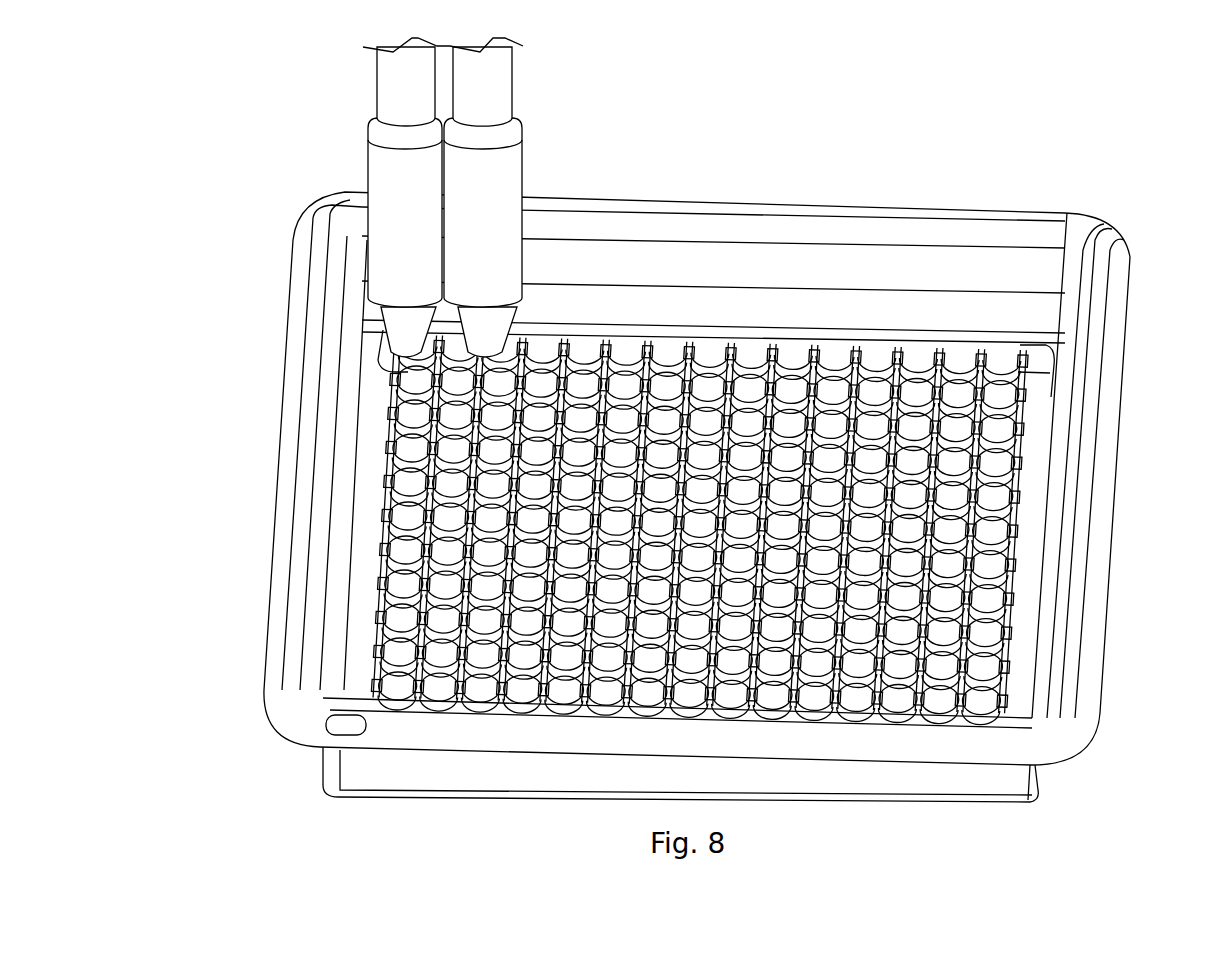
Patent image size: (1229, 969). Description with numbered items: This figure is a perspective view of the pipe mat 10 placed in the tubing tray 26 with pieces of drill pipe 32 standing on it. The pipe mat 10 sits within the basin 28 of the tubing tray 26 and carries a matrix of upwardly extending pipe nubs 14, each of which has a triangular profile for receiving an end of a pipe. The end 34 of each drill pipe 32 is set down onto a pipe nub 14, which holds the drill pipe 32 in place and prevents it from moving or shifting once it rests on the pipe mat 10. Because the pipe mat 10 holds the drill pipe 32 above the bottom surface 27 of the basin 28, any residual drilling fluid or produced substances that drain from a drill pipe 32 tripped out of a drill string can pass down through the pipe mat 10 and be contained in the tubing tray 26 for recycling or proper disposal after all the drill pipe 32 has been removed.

The pipe mat 10 is at (753, 427).
The pipe nub 14 is at (530, 350).
The tubing tray 26 is at (1107, 397).
The bottom surface 27 is at (372, 488).
The basin 28 is at (1025, 550).
The drill pipe 32 is at (392, 163).
The end 34 is at (400, 324).